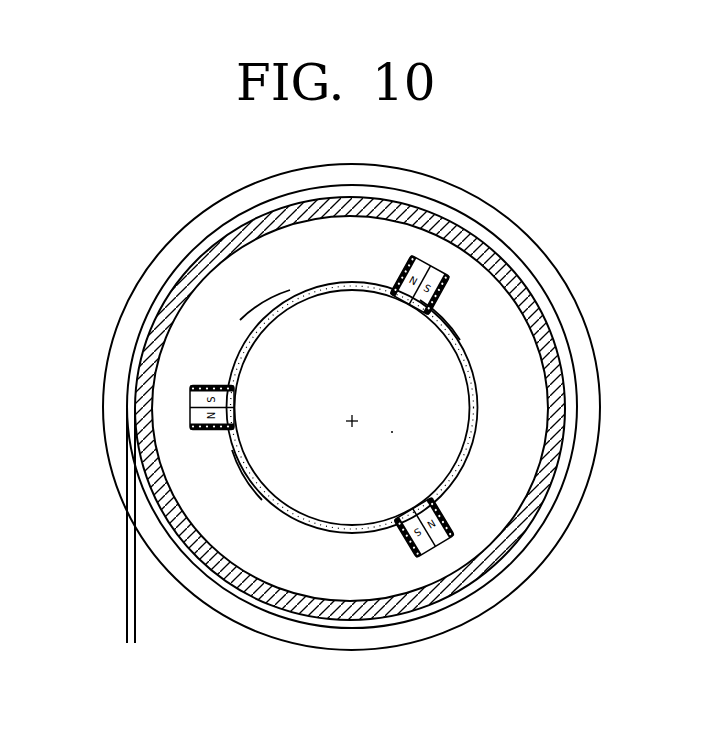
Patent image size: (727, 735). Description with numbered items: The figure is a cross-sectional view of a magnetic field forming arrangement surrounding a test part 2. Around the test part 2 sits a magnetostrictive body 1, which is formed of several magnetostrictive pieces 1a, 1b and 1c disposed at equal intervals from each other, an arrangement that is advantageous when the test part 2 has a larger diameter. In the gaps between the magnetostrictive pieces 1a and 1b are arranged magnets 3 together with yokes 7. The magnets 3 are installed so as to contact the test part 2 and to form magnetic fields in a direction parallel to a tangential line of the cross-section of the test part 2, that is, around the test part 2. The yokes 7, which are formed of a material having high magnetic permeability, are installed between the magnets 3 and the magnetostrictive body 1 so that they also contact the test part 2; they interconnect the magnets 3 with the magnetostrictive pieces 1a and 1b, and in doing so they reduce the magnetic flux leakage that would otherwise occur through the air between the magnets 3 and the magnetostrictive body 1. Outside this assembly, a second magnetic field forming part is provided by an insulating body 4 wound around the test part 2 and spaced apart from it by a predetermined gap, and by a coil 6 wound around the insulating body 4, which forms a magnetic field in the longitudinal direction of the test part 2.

The magnetostrictive body 1 is at (352, 407).
The magnetostrictive piece 1a is at (262, 325).
The magnetostrictive piece 1b is at (240, 447).
The magnetostrictive piece 1c is at (445, 320).
The test part 2 is at (452, 381).
The magnet 3 is at (430, 265).
The insulating body 4 is at (535, 285).
The coil 6 is at (508, 260).
The yoke 7 is at (448, 532).